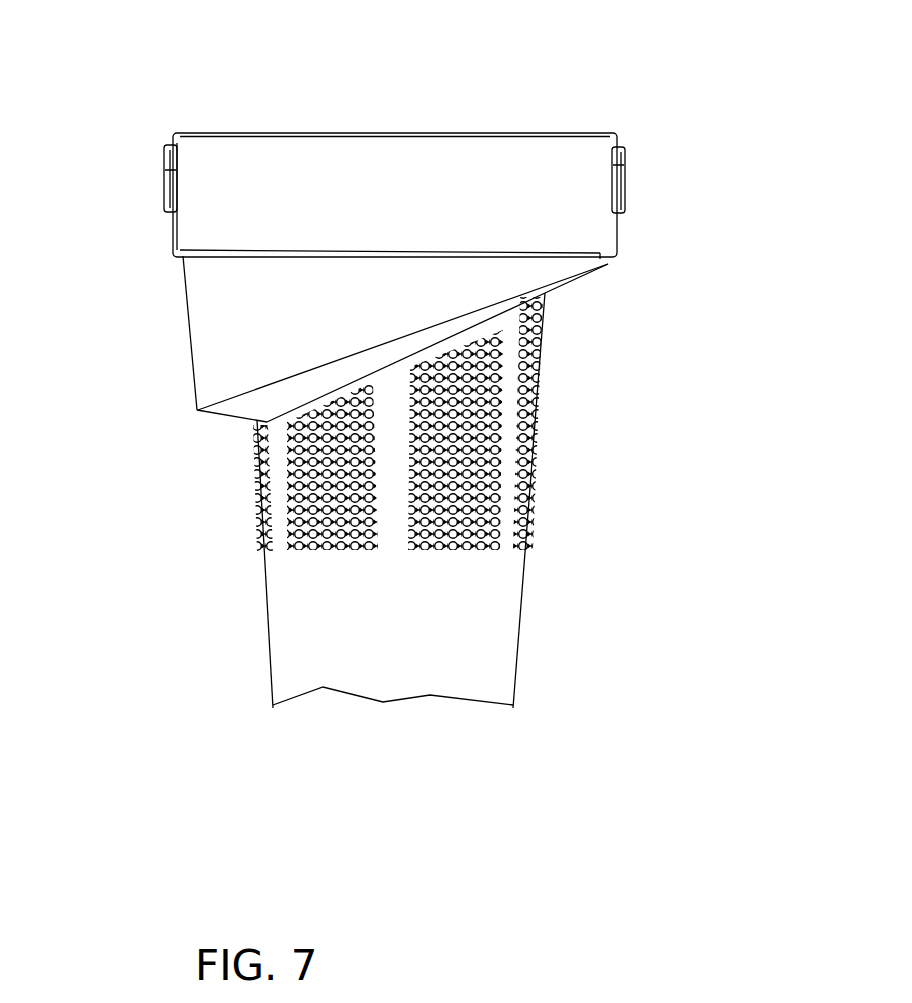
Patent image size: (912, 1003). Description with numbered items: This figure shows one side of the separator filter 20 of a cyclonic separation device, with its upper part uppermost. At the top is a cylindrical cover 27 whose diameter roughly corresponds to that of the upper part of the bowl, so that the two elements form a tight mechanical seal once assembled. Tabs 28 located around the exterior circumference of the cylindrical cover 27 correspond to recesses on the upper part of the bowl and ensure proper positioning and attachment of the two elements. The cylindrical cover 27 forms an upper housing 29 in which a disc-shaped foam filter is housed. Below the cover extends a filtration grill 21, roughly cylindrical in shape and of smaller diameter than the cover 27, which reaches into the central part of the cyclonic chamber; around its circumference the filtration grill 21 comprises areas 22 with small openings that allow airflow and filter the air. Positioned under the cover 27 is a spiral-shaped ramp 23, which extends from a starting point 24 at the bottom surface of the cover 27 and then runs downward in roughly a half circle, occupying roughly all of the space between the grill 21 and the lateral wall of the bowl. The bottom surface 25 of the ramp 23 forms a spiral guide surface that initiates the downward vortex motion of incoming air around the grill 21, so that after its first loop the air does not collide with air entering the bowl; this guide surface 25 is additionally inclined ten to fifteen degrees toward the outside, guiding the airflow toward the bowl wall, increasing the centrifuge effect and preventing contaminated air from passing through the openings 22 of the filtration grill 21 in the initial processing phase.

The separator filter 20 is at (538, 645).
The filtration grill 21 is at (264, 617).
The areas with small openings 22 is at (540, 364).
The ramp 23 is at (265, 305).
The starting point 24 is at (600, 259).
The bottom surface of the ramp 25 is at (258, 418).
The cylindrical cover 27 is at (173, 228).
The tabs 28 is at (165, 178).
The upper housing 29 is at (327, 115).